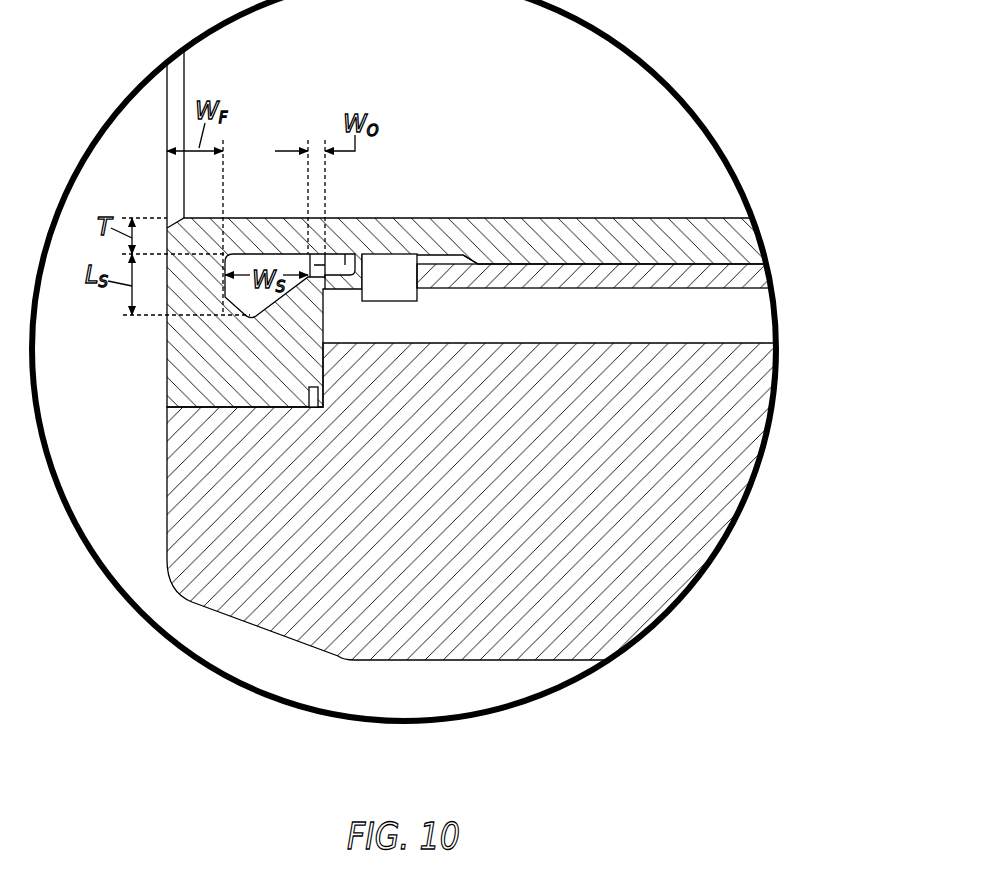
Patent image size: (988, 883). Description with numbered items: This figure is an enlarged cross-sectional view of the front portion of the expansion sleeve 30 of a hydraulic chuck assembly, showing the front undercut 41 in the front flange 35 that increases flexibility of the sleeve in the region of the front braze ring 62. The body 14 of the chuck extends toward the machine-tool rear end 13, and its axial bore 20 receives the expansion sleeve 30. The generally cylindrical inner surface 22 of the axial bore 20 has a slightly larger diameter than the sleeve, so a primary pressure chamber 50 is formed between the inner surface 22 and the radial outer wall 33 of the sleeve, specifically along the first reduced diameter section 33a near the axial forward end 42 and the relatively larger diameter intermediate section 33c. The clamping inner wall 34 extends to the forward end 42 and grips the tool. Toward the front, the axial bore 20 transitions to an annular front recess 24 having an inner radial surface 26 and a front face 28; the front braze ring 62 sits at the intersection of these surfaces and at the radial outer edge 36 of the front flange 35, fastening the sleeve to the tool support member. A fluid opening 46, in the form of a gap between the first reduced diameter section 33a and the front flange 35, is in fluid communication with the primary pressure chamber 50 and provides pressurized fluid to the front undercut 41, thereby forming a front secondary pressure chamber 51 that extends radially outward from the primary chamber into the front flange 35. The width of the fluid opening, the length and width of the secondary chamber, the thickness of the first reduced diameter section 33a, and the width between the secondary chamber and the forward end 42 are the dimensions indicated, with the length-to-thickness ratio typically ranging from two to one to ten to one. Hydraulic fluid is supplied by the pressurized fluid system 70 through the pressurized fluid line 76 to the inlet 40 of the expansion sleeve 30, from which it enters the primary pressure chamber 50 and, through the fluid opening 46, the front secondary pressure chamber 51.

The machine-tool rear end 13 is at (148, 136).
The body 14 is at (268, 585).
The axial bore 20 is at (649, 258).
The cylindrical inner surface 22 is at (594, 254).
The annular front recess 24 is at (276, 387).
The inner radial surface 26 is at (235, 405).
The front face 28 is at (320, 362).
The expansion sleeve 30 is at (617, 216).
The radial outer wall 33 is at (511, 270).
The first reduced diameter section 33a is at (446, 262).
The relatively larger diameter intermediate section 33c is at (556, 268).
The clamping inner wall 34 is at (502, 218).
The front flange 35 is at (193, 352).
The radial outer edge 36 is at (207, 407).
The inlet 40 is at (406, 301).
The front undercut 41 is at (265, 247).
The axial forward end 42 is at (156, 370).
The fluid opening 46 is at (334, 254).
The primary pressure chamber 50 is at (678, 268).
The front secondary pressure chamber 51 is at (288, 263).
The front braze ring 62 is at (320, 396).
The pressurized fluid system 70 is at (729, 353).
The pressurized fluid line 76 is at (742, 312).